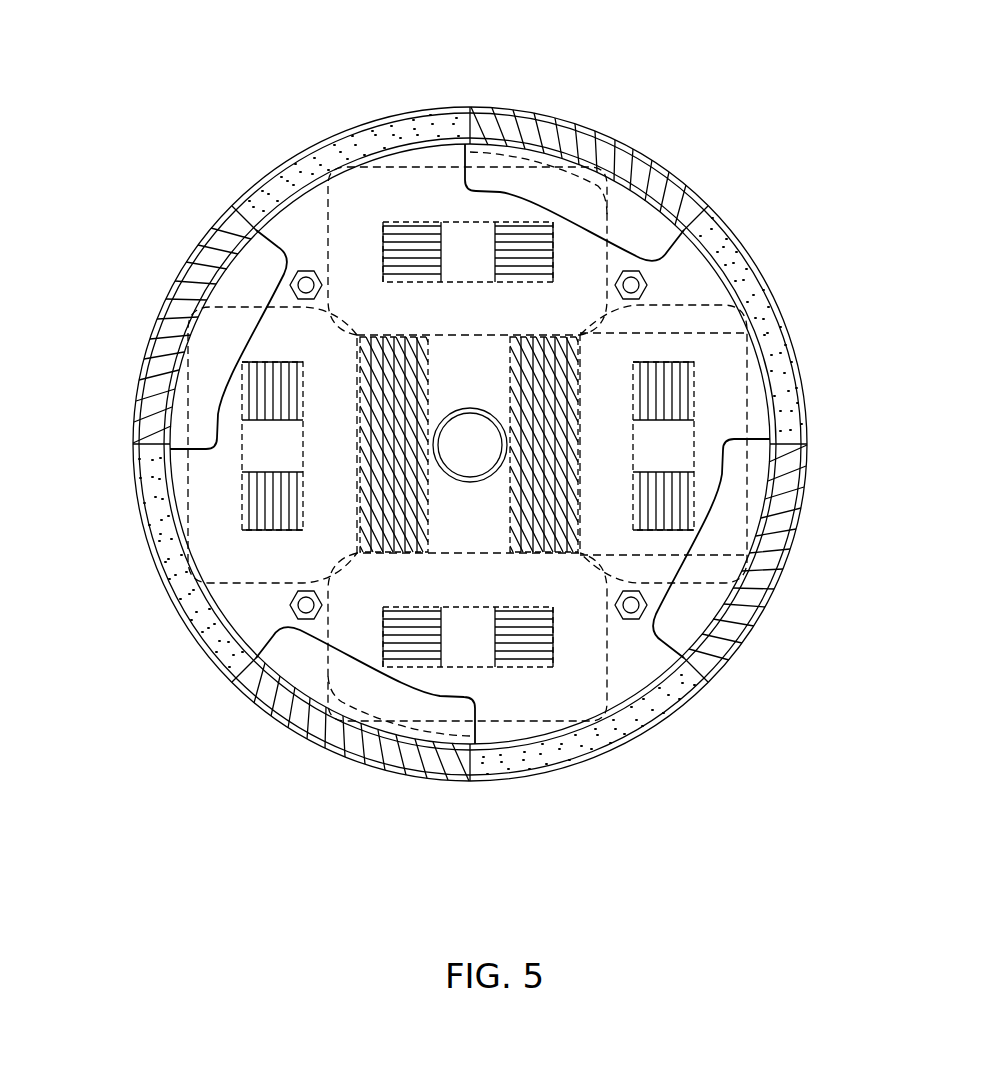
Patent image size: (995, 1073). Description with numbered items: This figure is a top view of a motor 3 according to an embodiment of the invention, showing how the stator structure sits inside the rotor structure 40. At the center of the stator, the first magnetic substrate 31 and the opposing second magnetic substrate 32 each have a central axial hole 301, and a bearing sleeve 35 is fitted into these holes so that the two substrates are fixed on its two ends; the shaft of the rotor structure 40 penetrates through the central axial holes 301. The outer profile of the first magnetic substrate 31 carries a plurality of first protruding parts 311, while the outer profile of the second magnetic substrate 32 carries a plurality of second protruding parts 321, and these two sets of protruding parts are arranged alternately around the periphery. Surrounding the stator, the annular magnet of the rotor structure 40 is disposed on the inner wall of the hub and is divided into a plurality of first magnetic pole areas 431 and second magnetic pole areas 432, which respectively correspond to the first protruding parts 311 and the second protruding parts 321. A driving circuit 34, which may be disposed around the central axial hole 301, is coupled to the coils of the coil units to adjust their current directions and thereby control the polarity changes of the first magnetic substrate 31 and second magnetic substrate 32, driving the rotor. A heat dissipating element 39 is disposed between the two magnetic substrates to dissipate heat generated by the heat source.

The motor 3 is at (148, 31).
The first magnetic substrate 31 is at (713, 580).
The central axial hole 301 is at (470, 443).
The first protruding parts 311 is at (713, 295).
The second magnetic substrate 32 is at (497, 150).
The second protruding parts 321 is at (608, 192).
The driving circuit 34 is at (415, 340).
The bearing sleeve 35 is at (470, 483).
The heat dissipating element 39 is at (568, 440).
The rotor structure 40 is at (134, 473).
The first magnetic pole areas 431 is at (178, 572).
The second magnetic pole areas 432 is at (165, 322).